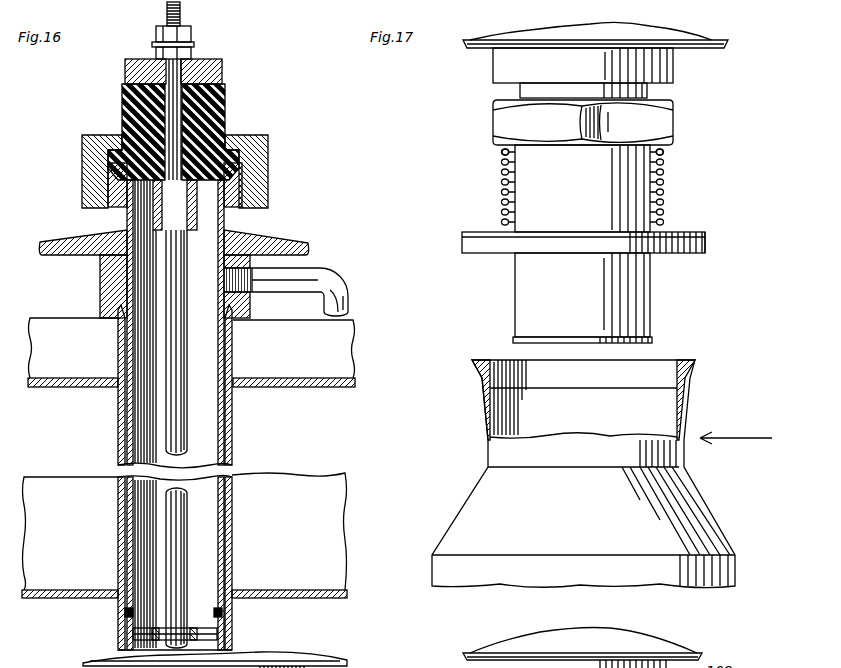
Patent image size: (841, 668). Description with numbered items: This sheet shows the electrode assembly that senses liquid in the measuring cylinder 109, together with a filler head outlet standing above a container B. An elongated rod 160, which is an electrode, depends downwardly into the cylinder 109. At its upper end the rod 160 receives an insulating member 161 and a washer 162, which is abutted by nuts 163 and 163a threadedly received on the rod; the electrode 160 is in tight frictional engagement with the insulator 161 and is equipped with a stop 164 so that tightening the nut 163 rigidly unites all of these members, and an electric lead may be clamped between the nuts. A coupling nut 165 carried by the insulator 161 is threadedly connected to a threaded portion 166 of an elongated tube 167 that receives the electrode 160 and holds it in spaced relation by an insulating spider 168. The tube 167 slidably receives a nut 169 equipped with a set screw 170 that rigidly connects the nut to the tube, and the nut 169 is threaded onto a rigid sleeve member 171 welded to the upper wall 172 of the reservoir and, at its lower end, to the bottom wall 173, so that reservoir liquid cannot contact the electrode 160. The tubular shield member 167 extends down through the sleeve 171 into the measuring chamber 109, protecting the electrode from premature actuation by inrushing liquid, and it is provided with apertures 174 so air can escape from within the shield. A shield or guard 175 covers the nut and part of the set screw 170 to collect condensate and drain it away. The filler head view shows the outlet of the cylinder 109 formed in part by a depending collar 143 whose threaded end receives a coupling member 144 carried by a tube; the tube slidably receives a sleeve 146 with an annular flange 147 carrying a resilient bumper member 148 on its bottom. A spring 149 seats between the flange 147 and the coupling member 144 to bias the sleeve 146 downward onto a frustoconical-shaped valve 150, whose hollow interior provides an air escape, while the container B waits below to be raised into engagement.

In FIG. 16, the elongated rod 160 is at (180, 432).
In FIG. 16, the insulating member 161 is at (228, 105).
In FIG. 16, the washer 162 is at (222, 70).
In FIG. 16, the nut 163 is at (194, 50).
In FIG. 16, the nut 163a is at (191, 35).
In FIG. 16, the stop 164 is at (197, 217).
In FIG. 16, the coupling nut 165 is at (268, 165).
In FIG. 16, the threaded portion 166 is at (242, 190).
In FIG. 16, the elongated tube 167 is at (100, 268).
In FIG. 16, the insulating spider 168 is at (210, 630).
In FIG. 16, the nut 169 is at (108, 285).
In FIG. 16, the set screw 170 is at (325, 270).
In FIG. 16, the rigid sleeve member 171 is at (230, 352).
In FIG. 16, the upper wall 172 is at (315, 387).
In FIG. 16, the bottom wall 173 is at (322, 598).
In FIG. 16, the apertures 174 is at (125, 612).
In FIG. 16, the shield or guard 175 is at (290, 243).
In FIG. 17, the measuring cylinder 109 is at (705, 42).
In FIG. 17, the depending collar 143 is at (648, 92).
In FIG. 17, the coupling member 144 is at (668, 125).
In FIG. 17, the slidable sleeve 146 is at (643, 292).
In FIG. 17, the annular flange 147 is at (706, 235).
In FIG. 17, the resilient bumper member 148 is at (700, 253).
In FIG. 17, the spring 149 is at (665, 173).
In FIG. 17, the frustoconical-shaped valve 150 is at (646, 343).
In FIG. 17, the containers B is at (700, 500).